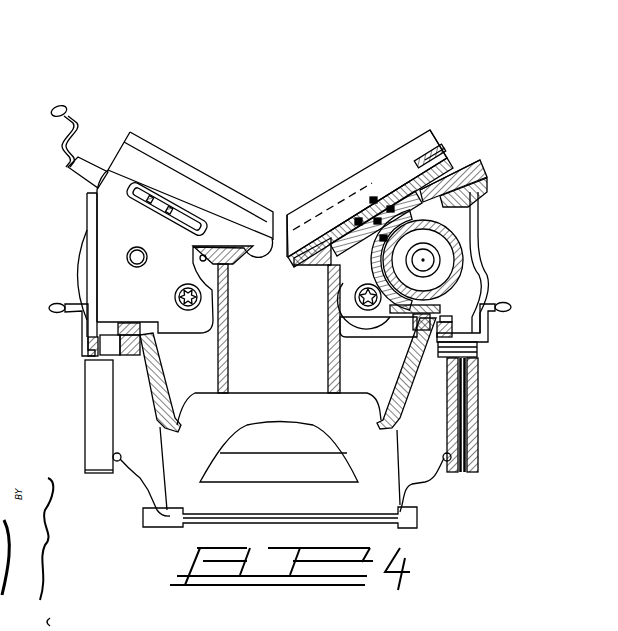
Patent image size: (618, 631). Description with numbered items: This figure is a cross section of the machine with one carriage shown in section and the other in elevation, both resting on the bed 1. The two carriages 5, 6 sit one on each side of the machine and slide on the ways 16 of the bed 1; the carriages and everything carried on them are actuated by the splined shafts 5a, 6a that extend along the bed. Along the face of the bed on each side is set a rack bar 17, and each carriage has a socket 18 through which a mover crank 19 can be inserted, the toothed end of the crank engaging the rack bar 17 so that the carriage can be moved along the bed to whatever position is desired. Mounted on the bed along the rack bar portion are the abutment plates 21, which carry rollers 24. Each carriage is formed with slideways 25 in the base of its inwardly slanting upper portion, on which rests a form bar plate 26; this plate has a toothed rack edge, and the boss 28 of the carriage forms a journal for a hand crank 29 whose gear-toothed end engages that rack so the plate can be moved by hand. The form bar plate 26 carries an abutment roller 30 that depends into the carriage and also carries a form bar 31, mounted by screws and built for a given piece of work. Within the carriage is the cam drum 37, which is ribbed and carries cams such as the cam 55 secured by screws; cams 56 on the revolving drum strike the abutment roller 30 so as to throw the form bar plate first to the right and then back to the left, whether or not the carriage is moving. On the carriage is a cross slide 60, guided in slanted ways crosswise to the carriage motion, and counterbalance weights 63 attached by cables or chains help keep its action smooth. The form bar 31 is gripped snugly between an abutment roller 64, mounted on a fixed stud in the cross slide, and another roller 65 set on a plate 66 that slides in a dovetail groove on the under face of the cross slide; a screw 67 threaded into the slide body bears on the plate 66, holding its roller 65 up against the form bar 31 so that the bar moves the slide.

The bed 1 is at (327, 352).
The carriage 5 is at (328, 312).
The splined shaft 5a is at (368, 311).
The carriage 6 is at (138, 285).
The splined shaft 6a is at (190, 303).
The ways 16 is at (300, 265).
The rack bar 17 is at (422, 345).
The socket 18 is at (477, 355).
The mover crank 19 is at (490, 336).
The abutment plate 21 is at (446, 323).
The roller 24 is at (450, 318).
The slideways 25 is at (333, 233).
The form bar plate 26 is at (433, 153).
The boss 28 is at (463, 167).
The hand crank 29 is at (492, 165).
The abutment roller 30 is at (462, 210).
The form bar 31 is at (380, 197).
The cam drum 37 is at (423, 262).
The cam 55 is at (410, 318).
The cam 56 is at (345, 289).
The cross slide 60 is at (407, 158).
The counterbalance weight 63 is at (470, 427).
The abutment roller 64 is at (358, 222).
The roller 65 is at (398, 215).
The plate 66 is at (447, 148).
The screw 67 is at (427, 155).